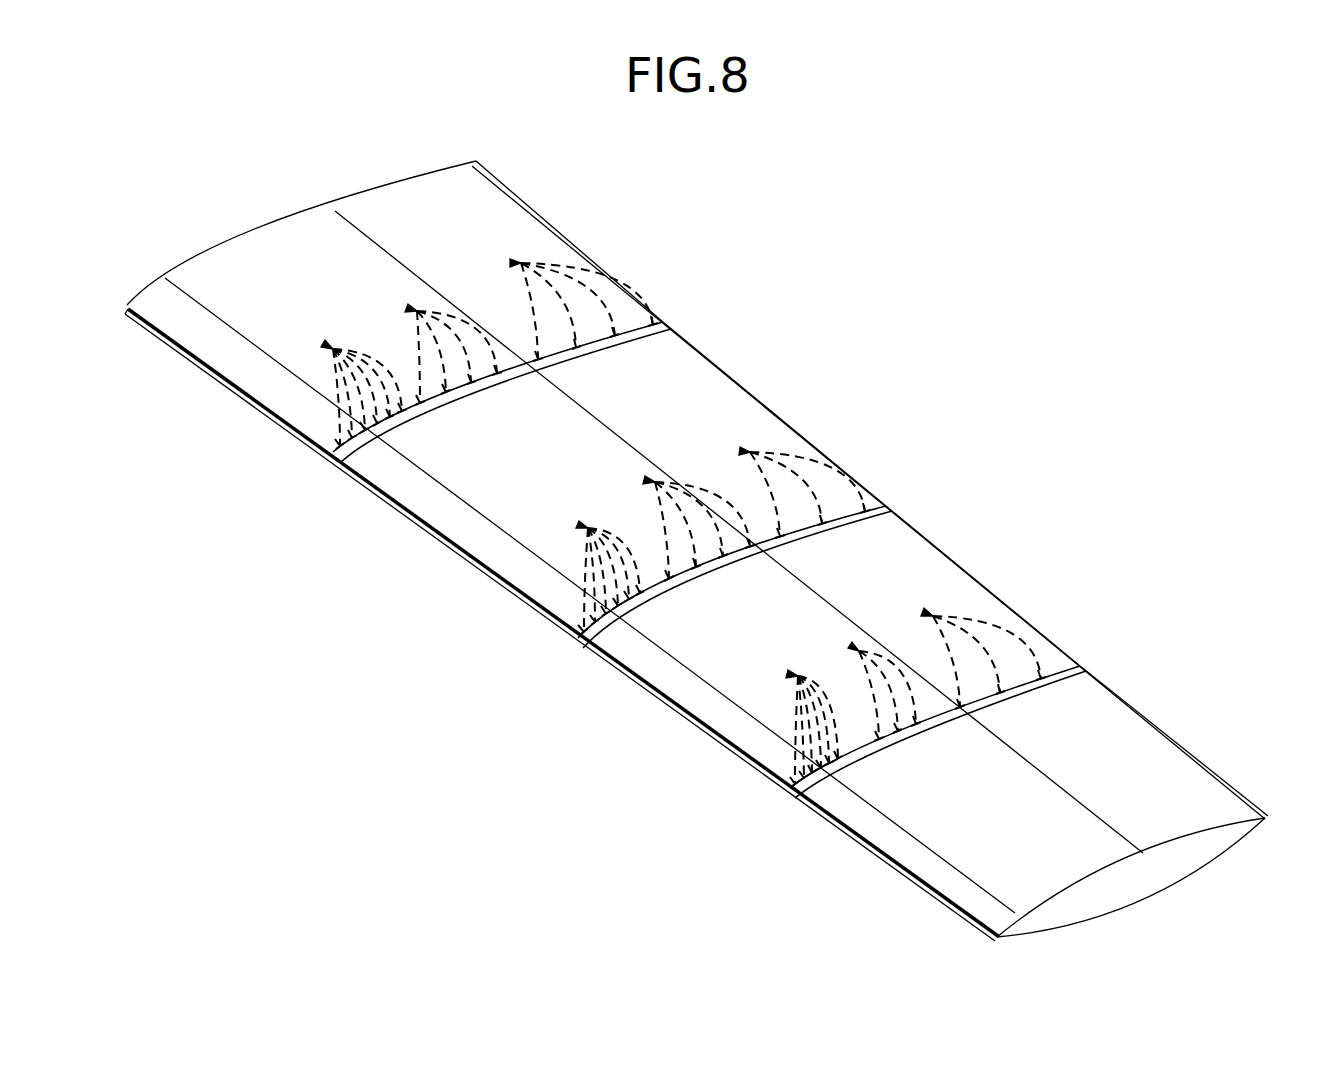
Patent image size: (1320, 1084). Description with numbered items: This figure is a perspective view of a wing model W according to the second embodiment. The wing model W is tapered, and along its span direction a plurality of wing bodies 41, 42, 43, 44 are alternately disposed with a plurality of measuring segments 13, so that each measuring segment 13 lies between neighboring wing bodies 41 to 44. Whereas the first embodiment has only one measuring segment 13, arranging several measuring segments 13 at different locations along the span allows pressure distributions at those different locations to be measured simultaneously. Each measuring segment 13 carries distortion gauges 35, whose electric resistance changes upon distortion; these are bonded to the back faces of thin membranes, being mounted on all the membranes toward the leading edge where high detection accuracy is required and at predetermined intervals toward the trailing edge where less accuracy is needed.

The measuring segment 13 is at (332, 467).
The distortion gauge 35 is at (330, 347).
The wing body 41 is at (579, 241).
The wing body 42 is at (786, 410).
The wing body 43 is at (976, 566).
The wing body 44 is at (1151, 722).
The wing model W is at (566, 729).